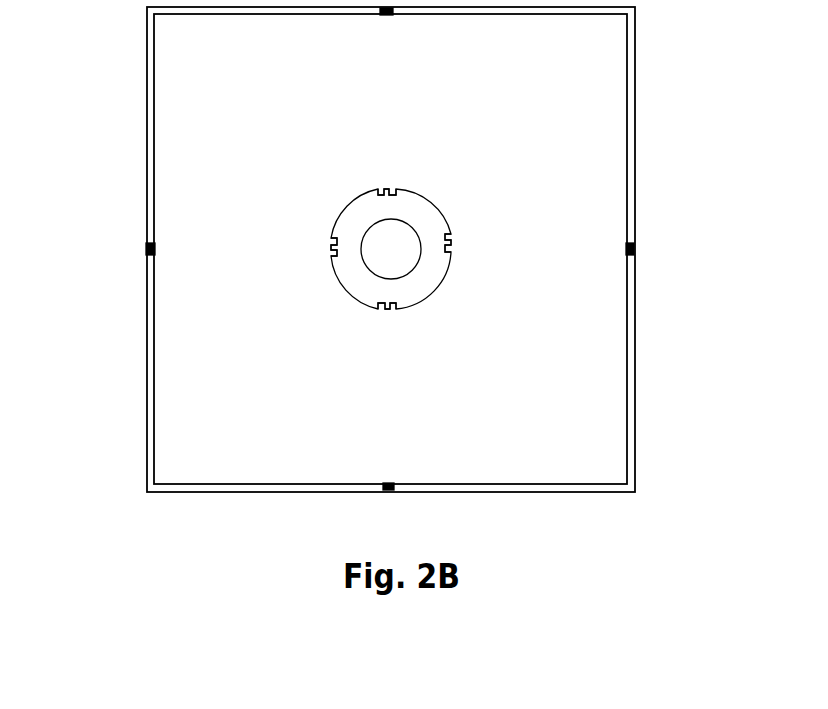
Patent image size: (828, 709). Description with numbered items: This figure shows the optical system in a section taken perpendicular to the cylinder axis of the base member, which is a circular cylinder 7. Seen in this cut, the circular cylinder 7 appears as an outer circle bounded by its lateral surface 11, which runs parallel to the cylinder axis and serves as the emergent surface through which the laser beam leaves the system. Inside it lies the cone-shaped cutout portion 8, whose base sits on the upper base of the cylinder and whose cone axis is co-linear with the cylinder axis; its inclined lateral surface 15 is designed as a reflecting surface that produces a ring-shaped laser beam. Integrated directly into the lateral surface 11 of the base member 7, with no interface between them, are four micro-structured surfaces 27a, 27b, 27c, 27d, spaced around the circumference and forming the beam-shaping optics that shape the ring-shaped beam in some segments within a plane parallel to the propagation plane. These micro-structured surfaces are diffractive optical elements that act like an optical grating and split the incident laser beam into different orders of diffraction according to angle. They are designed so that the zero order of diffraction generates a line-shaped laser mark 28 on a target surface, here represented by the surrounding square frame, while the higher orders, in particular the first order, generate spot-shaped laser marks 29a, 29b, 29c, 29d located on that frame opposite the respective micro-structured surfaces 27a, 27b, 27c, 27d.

The circular cylinder 7 is at (428, 290).
The cone-shaped cutout portion 8 is at (398, 260).
The lateral surface 11 is at (352, 199).
The lateral surface 15 is at (419, 232).
The micro-structured surface 27a is at (449, 255).
The micro-structured surface 27b is at (381, 306).
The micro-structured surface 27c is at (335, 255).
The micro-structured surface 27d is at (399, 190).
The line-shaped laser mark 28 is at (154, 385).
The spot-shaped laser mark 29a is at (634, 248).
The spot-shaped laser mark 29b is at (388, 482).
The spot-shaped laser mark 29c is at (147, 251).
The spot-shaped laser mark 29d is at (387, 16).